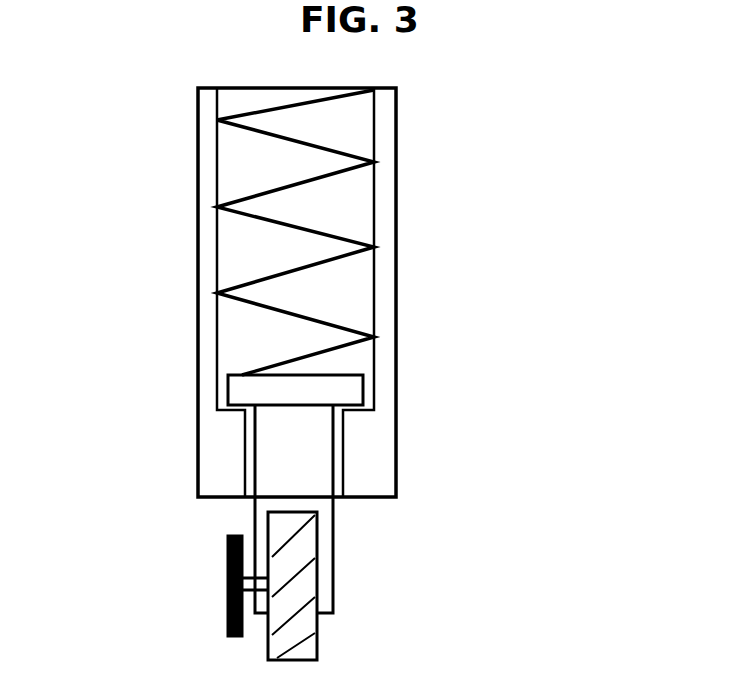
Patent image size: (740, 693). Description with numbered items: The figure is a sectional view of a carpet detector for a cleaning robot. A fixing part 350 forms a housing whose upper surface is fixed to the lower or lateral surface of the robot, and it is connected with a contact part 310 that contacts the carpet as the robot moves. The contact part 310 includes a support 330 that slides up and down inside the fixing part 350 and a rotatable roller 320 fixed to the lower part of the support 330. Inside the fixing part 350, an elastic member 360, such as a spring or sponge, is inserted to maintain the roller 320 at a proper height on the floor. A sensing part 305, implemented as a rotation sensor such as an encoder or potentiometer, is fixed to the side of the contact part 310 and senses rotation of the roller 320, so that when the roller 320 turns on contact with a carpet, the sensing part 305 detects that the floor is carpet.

The sensing part 305 is at (228, 610).
The contact part 310 is at (490, 522).
The roller 320 is at (317, 642).
The support 330 is at (335, 552).
The fixing part 350 is at (396, 236).
The elastic member 360 is at (330, 148).